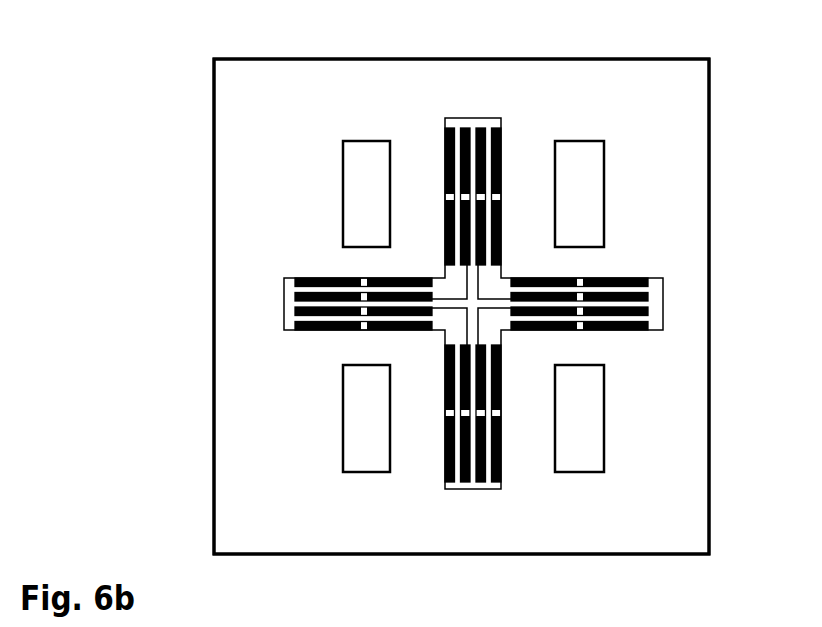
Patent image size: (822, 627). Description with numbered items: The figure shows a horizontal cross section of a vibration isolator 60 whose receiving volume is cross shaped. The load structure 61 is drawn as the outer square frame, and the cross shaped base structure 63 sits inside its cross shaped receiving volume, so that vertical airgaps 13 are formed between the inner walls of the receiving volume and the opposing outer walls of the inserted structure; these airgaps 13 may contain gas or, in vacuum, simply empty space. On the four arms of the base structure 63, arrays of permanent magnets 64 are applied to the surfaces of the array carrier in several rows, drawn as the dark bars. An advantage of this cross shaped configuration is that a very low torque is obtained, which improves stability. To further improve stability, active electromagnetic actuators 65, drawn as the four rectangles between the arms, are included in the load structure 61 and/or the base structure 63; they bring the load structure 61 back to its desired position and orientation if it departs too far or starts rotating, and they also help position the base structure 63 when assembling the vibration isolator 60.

The vibration isolator 60 is at (210, 48).
The load structure 61 is at (712, 305).
The base structure 63 is at (455, 296).
The arrays of permanent magnets 64 is at (485, 128).
The active electromagnetic actuators 65 is at (365, 473).
The vertical airgaps 13 is at (457, 482).